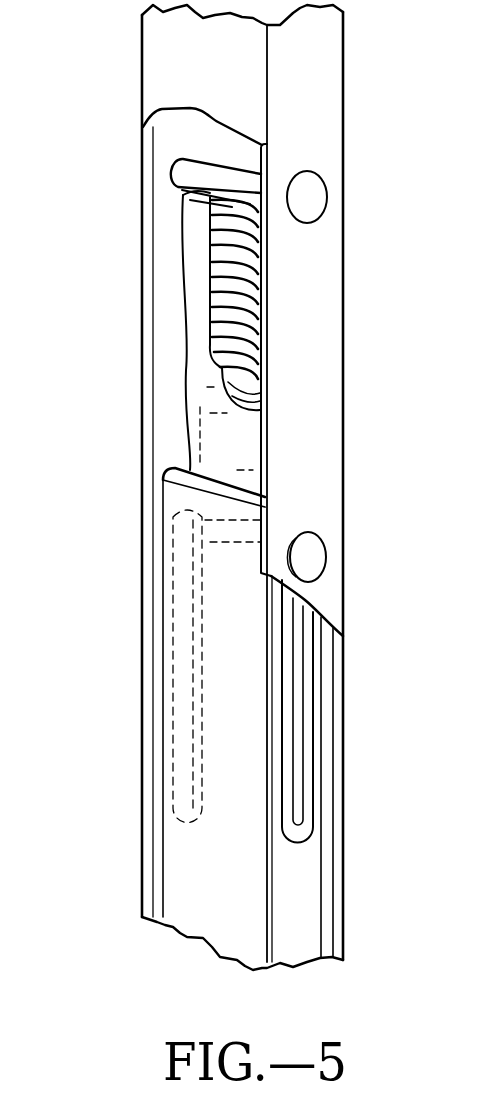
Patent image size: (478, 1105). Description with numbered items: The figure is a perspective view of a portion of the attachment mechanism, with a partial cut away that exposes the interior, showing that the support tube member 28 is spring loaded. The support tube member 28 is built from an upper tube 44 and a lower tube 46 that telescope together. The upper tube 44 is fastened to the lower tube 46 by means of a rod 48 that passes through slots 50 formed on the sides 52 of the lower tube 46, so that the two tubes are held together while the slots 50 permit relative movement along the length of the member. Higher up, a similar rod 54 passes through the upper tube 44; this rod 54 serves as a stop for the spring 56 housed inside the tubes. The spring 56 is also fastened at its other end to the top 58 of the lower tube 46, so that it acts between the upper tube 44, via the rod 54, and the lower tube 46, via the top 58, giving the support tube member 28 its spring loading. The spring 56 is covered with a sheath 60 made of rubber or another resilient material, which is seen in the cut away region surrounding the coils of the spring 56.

The support tube member 28 is at (368, 385).
The upper tube 44 is at (170, 60).
The lower tube 46 is at (220, 782).
The rod 48 is at (305, 557).
The slots 50 is at (294, 718).
The sides 52 is at (297, 873).
The rod 54 is at (231, 180).
The spring 56 is at (252, 252).
The top 58 is at (180, 460).
The sheath 60 is at (192, 373).